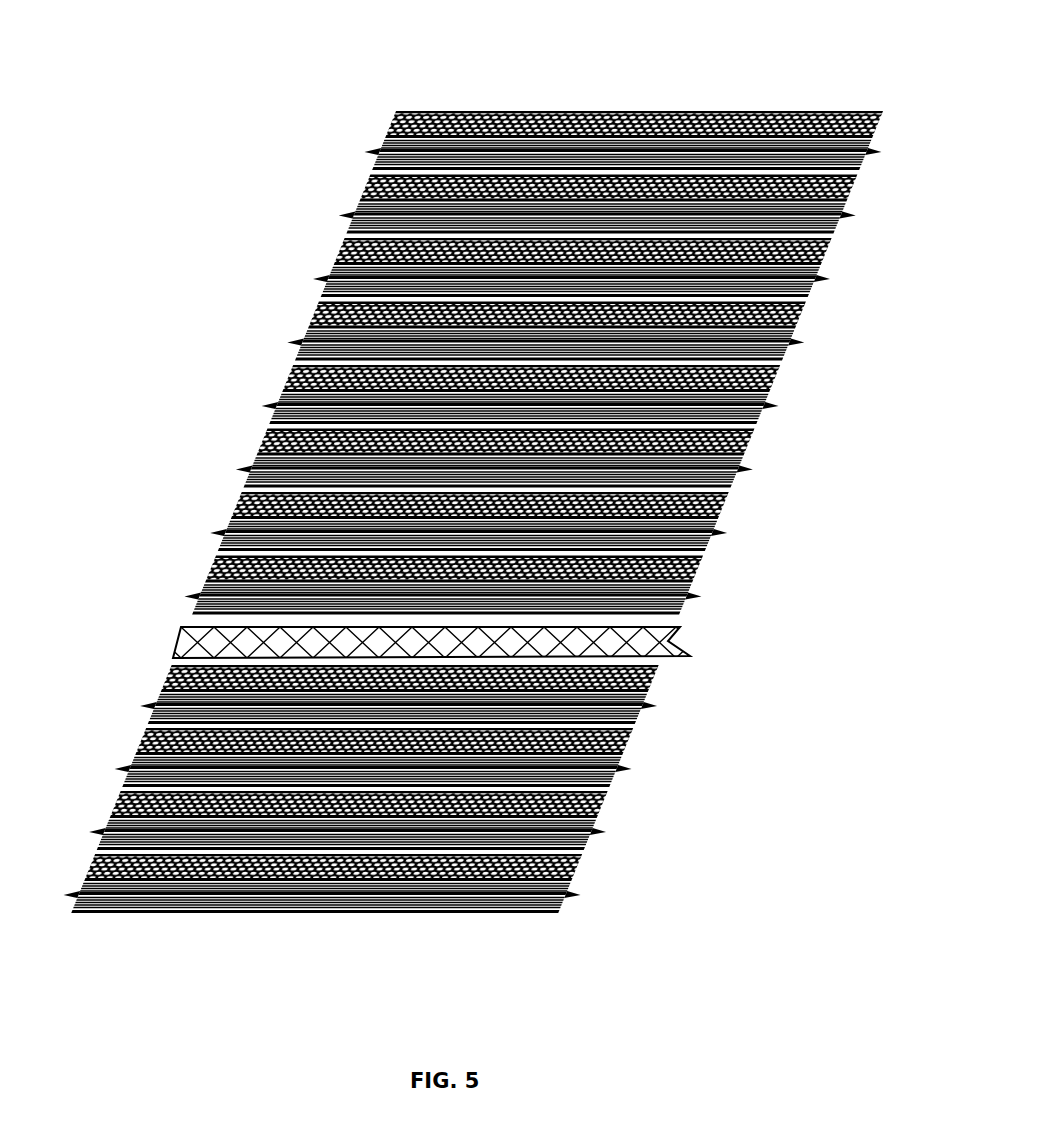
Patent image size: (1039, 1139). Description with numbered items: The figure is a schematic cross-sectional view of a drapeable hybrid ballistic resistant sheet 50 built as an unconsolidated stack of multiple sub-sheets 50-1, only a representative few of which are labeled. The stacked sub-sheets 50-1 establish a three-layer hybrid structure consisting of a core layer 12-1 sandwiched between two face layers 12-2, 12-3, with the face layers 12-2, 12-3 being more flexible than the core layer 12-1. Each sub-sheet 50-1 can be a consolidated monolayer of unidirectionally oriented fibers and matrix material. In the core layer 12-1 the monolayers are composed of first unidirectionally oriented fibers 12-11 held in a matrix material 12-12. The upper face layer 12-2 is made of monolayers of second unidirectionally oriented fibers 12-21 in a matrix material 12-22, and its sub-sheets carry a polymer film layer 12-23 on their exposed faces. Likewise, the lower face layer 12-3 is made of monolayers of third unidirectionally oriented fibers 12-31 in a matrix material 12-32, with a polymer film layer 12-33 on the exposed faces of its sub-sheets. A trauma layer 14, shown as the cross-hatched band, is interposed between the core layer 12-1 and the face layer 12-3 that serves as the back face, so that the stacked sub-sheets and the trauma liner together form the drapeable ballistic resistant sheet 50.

The drapeable ballistic resistant sheet 50 is at (616, 50).
The sub-sheet 50-1 is at (914, 92).
The core layer 12-1 is at (428, 613).
The face layer 12-2 is at (424, 293).
The face layer 12-3 is at (428, 918).
The first unidirectionally oriented fibers 12-11 is at (780, 370).
The matrix material 12-12 is at (772, 396).
The second unidirectionally oriented fibers 12-21 is at (448, 110).
The matrix material 12-22 is at (508, 110).
The polymer film layer 12-23 is at (408, 110).
The third unidirectionally oriented fibers 12-31 is at (120, 887).
The matrix material 12-32 is at (218, 885).
The polymer film layer 12-33 is at (87, 918).
The trauma layer 14 is at (178, 647).